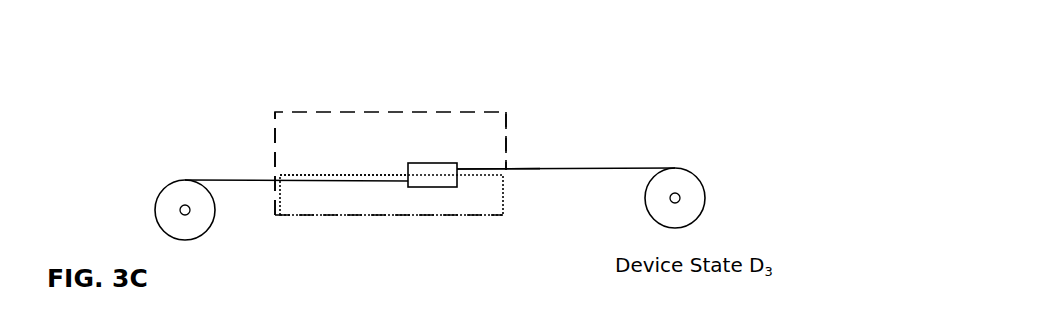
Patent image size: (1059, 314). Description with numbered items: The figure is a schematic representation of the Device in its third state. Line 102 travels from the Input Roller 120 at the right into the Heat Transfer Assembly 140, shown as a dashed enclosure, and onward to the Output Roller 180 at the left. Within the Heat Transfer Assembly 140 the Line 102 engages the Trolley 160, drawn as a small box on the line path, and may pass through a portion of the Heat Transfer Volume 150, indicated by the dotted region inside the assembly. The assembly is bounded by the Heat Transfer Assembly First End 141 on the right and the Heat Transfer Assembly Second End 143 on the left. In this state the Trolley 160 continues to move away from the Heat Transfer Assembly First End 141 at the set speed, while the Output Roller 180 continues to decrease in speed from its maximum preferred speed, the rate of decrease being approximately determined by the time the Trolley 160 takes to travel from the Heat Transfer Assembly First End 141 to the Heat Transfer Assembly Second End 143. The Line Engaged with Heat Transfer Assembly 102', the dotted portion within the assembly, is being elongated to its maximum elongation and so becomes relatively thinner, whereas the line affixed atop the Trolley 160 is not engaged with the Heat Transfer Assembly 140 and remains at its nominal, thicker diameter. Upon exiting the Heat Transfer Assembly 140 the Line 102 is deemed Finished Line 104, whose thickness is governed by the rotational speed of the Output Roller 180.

The Output Roller 180 is at (157, 178).
The Input Roller 120 is at (683, 162).
The Finished Line 104 is at (228, 181).
The Line 102 is at (566, 193).
The Line Engaged with Heat Transfer Assembly 102' is at (391, 227).
The Heat Transfer Assembly 140 is at (293, 112).
The Heat Transfer Assembly Second End 143 is at (268, 137).
The Heat Transfer Assembly First End 141 is at (513, 148).
The Trolley 160 is at (440, 160).
The Heat Transfer Volume 150 is at (375, 171).